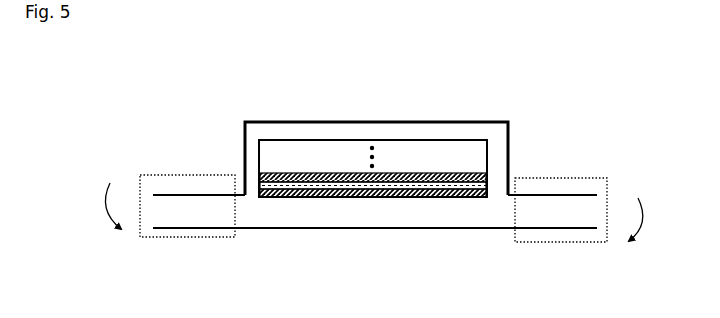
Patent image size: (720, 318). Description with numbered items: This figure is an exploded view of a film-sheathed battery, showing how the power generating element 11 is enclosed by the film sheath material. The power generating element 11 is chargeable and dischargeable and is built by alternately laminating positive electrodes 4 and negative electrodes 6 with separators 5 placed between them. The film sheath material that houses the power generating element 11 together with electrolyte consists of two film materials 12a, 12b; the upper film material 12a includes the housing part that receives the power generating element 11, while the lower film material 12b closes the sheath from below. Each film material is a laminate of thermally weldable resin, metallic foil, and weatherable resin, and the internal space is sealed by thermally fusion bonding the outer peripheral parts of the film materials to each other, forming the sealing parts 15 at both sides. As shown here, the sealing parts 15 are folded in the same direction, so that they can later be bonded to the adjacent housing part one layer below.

The film material 12a is at (268, 122).
The film material 12b is at (315, 228).
The power generating element 11 is at (350, 157).
The negative electrode 6 is at (450, 174).
The separator 5 is at (467, 197).
The positive electrode 4 is at (438, 198).
The sealing part 15 is at (167, 175).